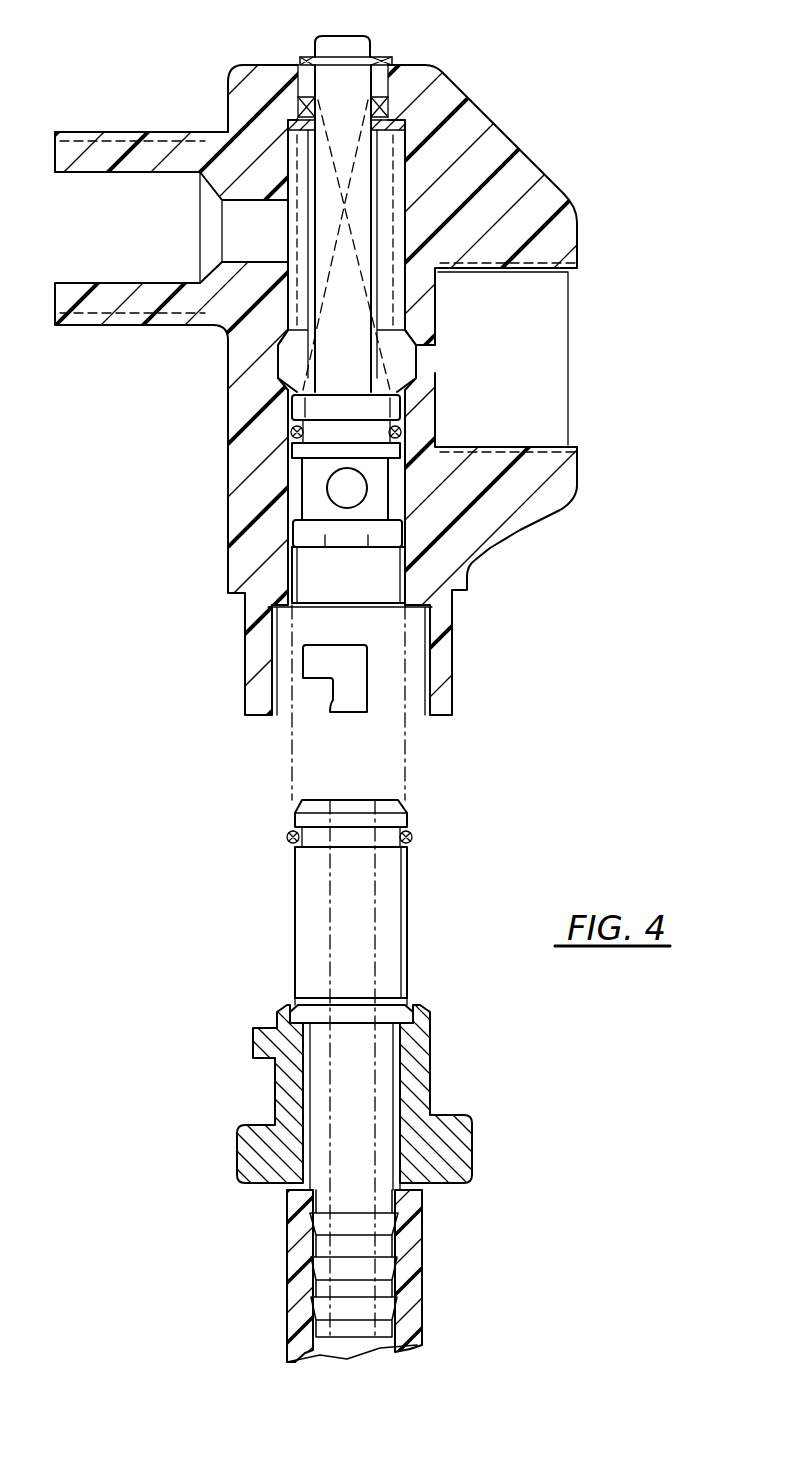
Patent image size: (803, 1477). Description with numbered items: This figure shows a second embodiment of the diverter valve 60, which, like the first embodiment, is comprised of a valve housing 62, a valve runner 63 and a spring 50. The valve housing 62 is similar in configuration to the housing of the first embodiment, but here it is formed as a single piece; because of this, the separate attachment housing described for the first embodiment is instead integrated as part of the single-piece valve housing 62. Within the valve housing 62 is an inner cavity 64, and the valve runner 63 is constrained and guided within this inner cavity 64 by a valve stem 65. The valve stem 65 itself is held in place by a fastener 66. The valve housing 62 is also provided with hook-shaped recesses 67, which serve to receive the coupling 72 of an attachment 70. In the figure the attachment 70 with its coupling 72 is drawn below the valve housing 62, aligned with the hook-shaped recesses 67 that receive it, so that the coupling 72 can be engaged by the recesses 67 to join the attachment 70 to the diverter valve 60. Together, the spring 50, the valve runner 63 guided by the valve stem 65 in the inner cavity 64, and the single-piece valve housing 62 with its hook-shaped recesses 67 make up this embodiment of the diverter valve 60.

The spring 50 is at (348, 307).
The diverter valve 60 is at (580, 148).
The valve housing 62 is at (207, 310).
The valve runner 63 is at (298, 437).
The inner cavity 64 is at (298, 157).
The valve stem 65 is at (325, 85).
The fastener 66 is at (387, 58).
The hook-shaped recesses 67 is at (328, 706).
The attachment 70 is at (452, 1288).
The coupling 72 is at (192, 790).